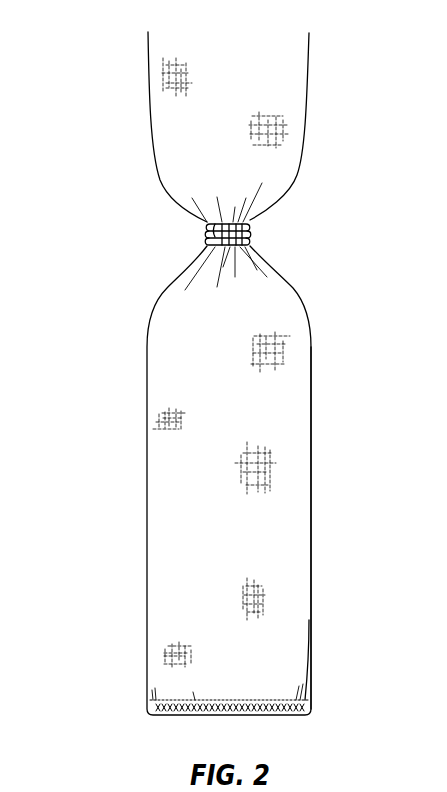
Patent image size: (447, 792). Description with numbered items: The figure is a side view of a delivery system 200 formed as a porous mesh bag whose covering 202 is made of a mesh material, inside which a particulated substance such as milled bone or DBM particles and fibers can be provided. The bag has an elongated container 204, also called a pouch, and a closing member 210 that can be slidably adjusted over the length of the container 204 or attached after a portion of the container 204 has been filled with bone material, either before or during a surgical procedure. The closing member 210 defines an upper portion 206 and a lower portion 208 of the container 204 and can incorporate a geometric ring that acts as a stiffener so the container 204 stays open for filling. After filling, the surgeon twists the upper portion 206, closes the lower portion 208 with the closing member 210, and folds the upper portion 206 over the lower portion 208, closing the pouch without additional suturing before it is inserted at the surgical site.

The delivery system 200 is at (208, 373).
The covering 202 is at (311, 480).
The container 204 is at (208, 480).
The upper portion 206 is at (147, 85).
The lower portion 208 is at (311, 583).
The closing member 210 is at (188, 245).